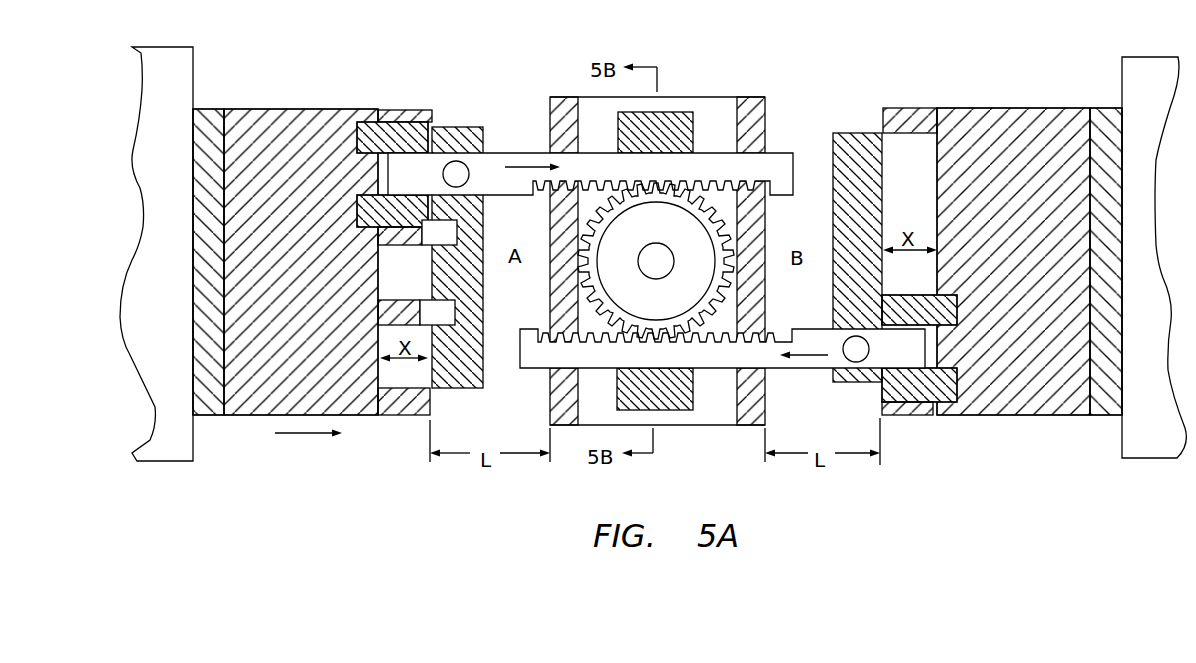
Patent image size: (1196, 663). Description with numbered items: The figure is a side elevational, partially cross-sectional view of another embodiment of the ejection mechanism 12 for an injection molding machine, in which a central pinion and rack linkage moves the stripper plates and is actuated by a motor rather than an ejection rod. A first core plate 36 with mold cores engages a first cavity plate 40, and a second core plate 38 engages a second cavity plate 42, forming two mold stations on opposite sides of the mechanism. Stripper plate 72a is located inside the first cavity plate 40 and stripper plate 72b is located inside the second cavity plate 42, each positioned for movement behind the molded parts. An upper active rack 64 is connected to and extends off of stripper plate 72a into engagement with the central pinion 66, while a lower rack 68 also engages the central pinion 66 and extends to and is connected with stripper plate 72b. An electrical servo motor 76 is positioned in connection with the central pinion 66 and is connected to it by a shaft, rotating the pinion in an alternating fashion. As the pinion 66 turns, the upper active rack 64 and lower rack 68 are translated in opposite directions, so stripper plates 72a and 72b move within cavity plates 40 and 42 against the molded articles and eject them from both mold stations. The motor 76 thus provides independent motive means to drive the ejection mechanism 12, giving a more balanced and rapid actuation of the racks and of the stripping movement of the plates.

The ejection mechanism 12 is at (513, 379).
The first core plate 36 is at (553, 117).
The second core plate 38 is at (748, 102).
The first cavity plate 40 is at (398, 110).
The second cavity plate 42 is at (898, 110).
The upper active rack 64 is at (595, 167).
The central pinion 66 is at (690, 205).
The lower rack 68 is at (772, 348).
The stripper plate 72a is at (443, 127).
The stripper plate 72b is at (857, 138).
The electrical servo motor 76 is at (645, 257).